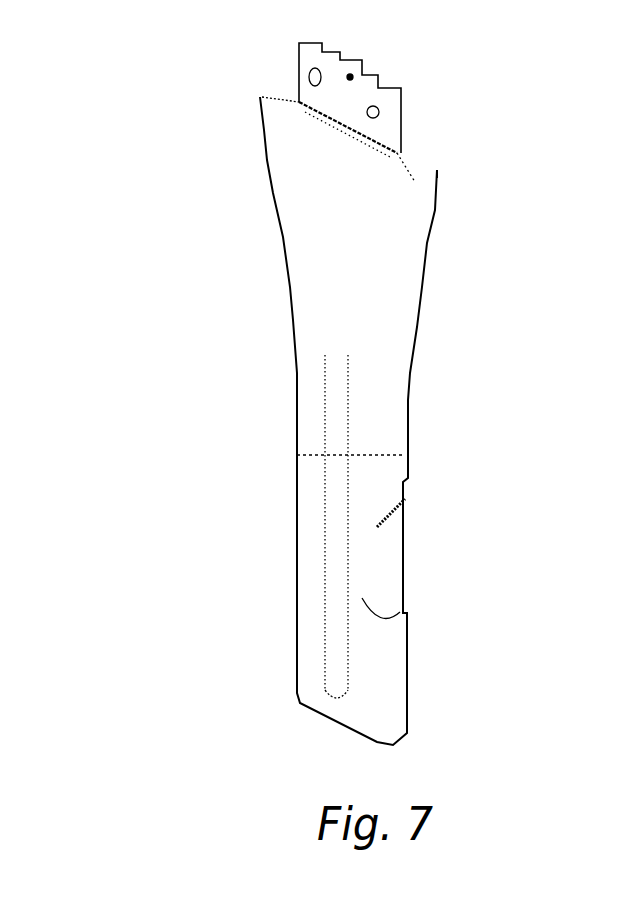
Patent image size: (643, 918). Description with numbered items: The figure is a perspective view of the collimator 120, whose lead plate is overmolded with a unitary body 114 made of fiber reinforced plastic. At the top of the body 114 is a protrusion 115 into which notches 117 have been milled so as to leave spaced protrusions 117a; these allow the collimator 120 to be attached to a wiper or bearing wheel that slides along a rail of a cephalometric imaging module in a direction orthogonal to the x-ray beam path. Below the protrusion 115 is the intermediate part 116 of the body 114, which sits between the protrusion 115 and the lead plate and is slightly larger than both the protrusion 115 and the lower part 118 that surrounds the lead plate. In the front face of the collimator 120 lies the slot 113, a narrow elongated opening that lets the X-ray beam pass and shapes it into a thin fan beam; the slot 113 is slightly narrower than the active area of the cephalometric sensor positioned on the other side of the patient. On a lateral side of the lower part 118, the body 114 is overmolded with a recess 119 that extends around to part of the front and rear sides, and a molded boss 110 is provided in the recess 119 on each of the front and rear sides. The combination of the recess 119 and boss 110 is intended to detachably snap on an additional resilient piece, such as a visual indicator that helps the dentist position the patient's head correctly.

The molded boss 110 is at (385, 558).
The slot 113 is at (352, 435).
The unitary body 114 is at (453, 208).
The protrusion 115 is at (397, 130).
The intermediate part 116 is at (362, 287).
The notches 117 is at (318, 62).
The spaced protrusions 117a is at (401, 88).
The lower part 118 is at (308, 592).
The recess 119 is at (405, 499).
The collimator 120 is at (128, 278).